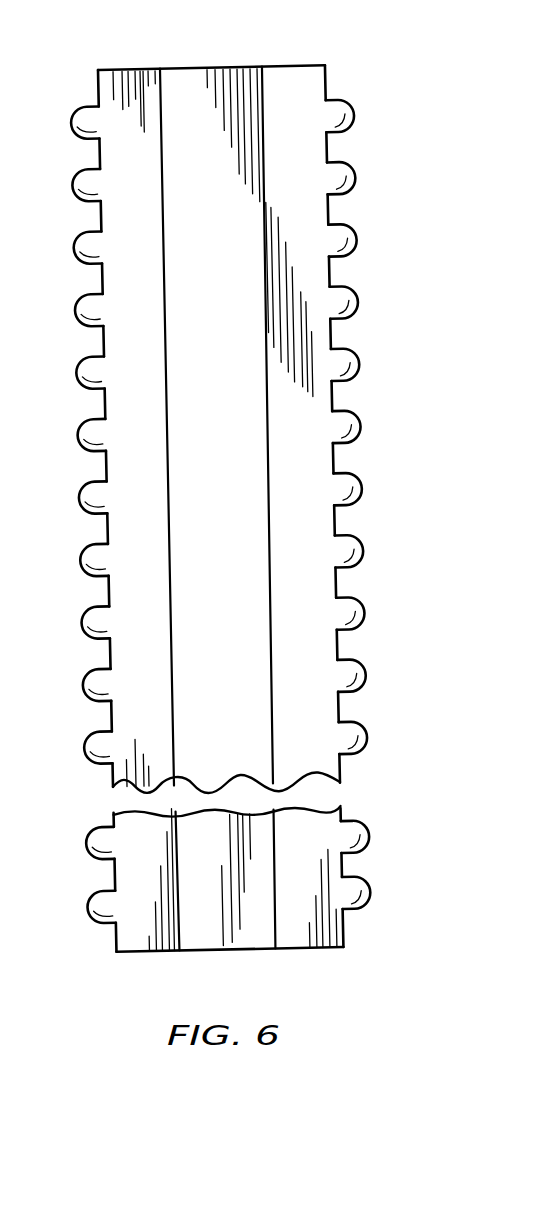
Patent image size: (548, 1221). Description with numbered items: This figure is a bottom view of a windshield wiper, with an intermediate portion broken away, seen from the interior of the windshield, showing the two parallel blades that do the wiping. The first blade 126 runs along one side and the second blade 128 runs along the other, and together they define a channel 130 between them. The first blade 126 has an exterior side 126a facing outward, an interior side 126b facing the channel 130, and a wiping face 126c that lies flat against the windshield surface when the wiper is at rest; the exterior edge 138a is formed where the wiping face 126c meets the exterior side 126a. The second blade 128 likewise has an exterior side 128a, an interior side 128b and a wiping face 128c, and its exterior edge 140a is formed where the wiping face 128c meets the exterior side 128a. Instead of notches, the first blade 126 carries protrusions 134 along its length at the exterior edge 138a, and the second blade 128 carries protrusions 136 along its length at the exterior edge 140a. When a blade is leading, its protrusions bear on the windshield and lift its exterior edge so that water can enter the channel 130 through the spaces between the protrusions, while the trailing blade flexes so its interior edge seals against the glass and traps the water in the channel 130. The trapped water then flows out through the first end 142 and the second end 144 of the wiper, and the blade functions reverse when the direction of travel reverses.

The first blade 126 is at (123, 288).
The exterior side 126a is at (158, 192).
The interior side 126b is at (176, 724).
The wiping face 126c is at (148, 619).
The second blade 128 is at (303, 517).
The exterior side 128a is at (335, 395).
The interior side 128b is at (270, 702).
The wiping face 128c is at (305, 293).
The channel 130 is at (240, 405).
The protrusions 134 is at (80, 433).
The protrusions 136 is at (344, 559).
The exterior edge 138a is at (220, 216).
The exterior edge 140a is at (408, 220).
The first end 142 is at (188, 69).
The second end 144 is at (232, 952).